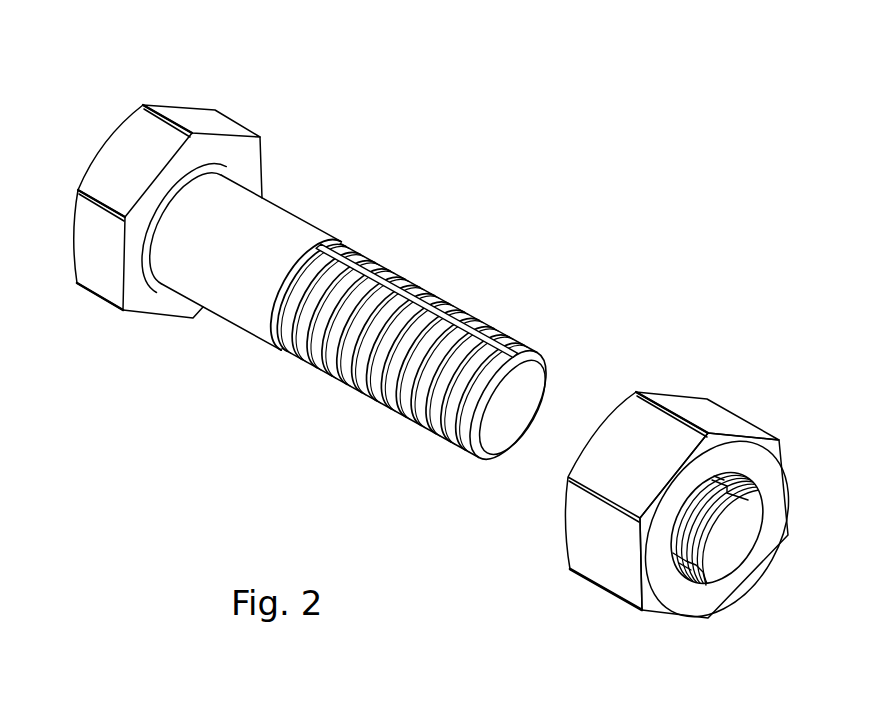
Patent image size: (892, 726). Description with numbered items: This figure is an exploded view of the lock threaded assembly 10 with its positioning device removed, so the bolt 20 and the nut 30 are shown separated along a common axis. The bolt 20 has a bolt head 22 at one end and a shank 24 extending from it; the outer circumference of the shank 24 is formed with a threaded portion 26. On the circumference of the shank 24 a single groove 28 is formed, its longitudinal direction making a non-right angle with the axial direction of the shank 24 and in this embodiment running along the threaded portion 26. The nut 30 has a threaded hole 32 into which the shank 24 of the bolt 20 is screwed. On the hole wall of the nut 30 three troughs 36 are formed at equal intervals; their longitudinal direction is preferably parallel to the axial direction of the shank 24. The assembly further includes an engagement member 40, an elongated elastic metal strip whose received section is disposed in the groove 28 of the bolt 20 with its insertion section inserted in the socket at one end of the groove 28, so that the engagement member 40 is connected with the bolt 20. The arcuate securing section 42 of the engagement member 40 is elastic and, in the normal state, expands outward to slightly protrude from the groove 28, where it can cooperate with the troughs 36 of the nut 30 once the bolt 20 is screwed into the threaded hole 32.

The lock threaded assembly 10 is at (665, 161).
The bolt 20 is at (310, 153).
The bolt head 22 is at (117, 158).
The shank 24 is at (243, 298).
The threaded portion 26 is at (368, 248).
The groove 28 is at (549, 372).
The nut 30 is at (757, 380).
The threaded hole 32 is at (727, 548).
The trough 36 is at (742, 500).
The engagement member 40 is at (433, 288).
The securing section 42 is at (393, 268).